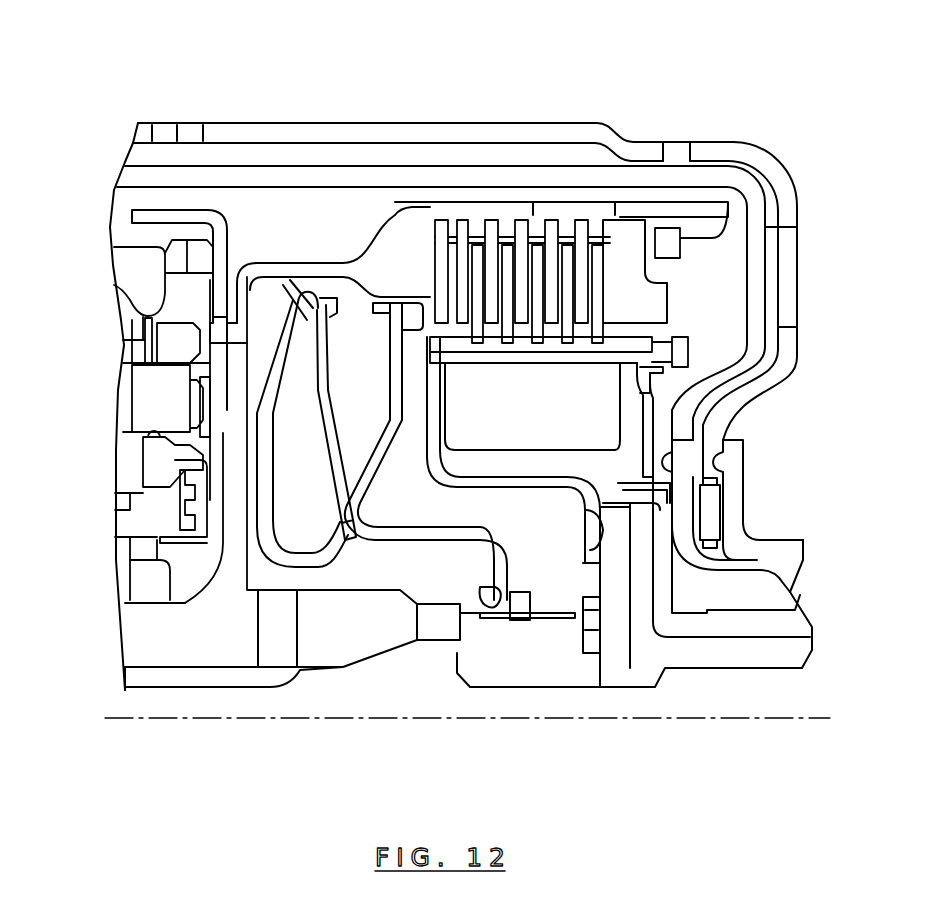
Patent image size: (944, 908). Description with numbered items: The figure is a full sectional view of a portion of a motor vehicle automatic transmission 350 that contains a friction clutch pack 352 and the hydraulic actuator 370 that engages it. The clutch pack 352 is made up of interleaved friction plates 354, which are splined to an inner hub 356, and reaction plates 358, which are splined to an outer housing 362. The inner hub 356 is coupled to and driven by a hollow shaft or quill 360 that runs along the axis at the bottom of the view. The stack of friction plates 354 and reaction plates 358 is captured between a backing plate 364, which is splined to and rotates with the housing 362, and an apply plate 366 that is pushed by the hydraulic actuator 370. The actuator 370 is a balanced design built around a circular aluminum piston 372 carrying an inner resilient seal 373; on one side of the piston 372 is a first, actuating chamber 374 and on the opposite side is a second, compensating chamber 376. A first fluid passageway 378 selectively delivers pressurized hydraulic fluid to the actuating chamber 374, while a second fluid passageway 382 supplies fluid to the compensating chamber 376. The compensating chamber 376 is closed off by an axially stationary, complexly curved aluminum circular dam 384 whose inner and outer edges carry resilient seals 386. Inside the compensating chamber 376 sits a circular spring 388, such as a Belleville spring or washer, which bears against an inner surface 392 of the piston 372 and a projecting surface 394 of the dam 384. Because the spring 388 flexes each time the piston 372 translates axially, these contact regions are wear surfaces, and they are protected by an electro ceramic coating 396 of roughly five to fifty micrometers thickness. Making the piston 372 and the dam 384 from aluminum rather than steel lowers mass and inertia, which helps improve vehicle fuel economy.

The automatic transmission 350 is at (90, 66).
The friction clutch pack 352 is at (648, 108).
The friction plates 354 is at (566, 345).
The inner hub 356 is at (458, 345).
The reaction plates 358 is at (524, 222).
The hollow shaft or quill 360 is at (617, 668).
The outer housing 362 is at (441, 222).
The backing plate 364 is at (650, 300).
The apply plate 366 is at (462, 222).
The hydraulic actuator 370 is at (370, 684).
The circular aluminum piston 372 is at (267, 470).
The inner resilient seal 373 is at (322, 583).
The actuating chamber 374 is at (263, 575).
The compensating chamber 376 is at (497, 457).
The first fluid passageway 378 is at (275, 638).
The second fluid passageway 382 is at (445, 630).
The circular dam 384 is at (378, 468).
The resilient seals 386 is at (377, 307).
The circular spring 388 is at (320, 408).
The inner surface 392 is at (307, 330).
The projecting surface 394 is at (358, 535).
The electro ceramic coating 396 is at (327, 313).